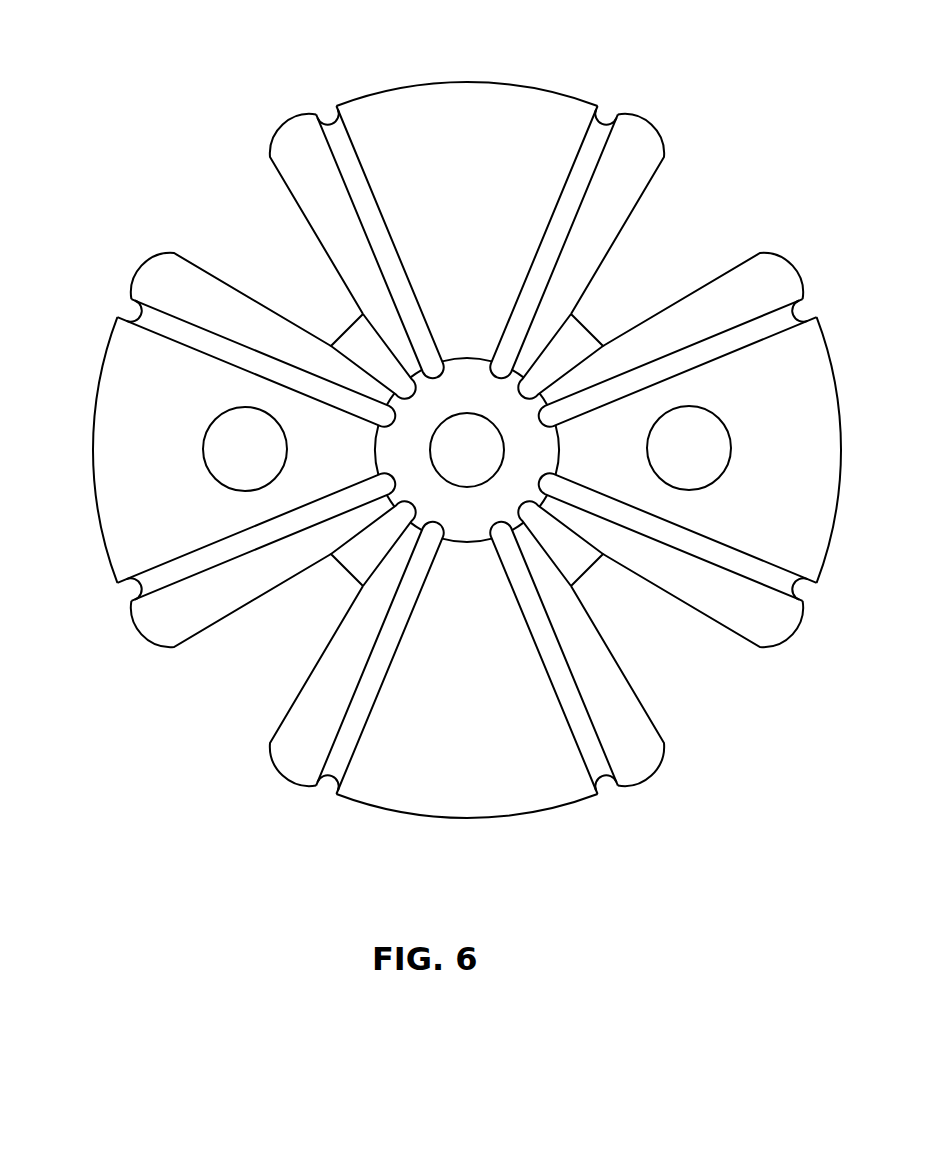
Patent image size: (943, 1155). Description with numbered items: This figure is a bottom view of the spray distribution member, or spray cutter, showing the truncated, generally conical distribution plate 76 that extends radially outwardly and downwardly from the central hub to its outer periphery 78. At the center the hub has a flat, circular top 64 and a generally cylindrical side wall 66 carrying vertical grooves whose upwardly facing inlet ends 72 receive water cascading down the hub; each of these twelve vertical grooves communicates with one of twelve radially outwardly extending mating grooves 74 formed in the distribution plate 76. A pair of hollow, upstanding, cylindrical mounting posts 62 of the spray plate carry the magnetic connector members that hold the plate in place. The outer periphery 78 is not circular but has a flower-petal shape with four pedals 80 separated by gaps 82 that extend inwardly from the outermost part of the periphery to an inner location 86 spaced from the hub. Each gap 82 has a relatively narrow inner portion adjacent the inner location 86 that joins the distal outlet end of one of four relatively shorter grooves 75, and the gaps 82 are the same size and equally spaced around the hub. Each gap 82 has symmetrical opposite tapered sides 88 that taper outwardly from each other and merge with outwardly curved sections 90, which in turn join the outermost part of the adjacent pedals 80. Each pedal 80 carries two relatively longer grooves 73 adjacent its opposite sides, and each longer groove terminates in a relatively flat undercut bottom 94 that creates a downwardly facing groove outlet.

The mounting posts 62 is at (720, 442).
The top 64 is at (472, 470).
The cylindrical side wall 66 is at (468, 362).
The inlet ends 72 is at (550, 412).
The longer grooves 73 is at (600, 746).
The radially outwardly extending grooves 74 is at (352, 198).
The shorter grooves 75 is at (588, 335).
The distribution plate 76 is at (472, 92).
The outer periphery 78 is at (521, 815).
The pedals 80 is at (96, 470).
The gaps 82 is at (228, 692).
The inner location 86 is at (583, 572).
The tapered sides 88 is at (610, 652).
The outwardly curved sections 90 is at (776, 645).
The undercut bottom 94 is at (118, 313).